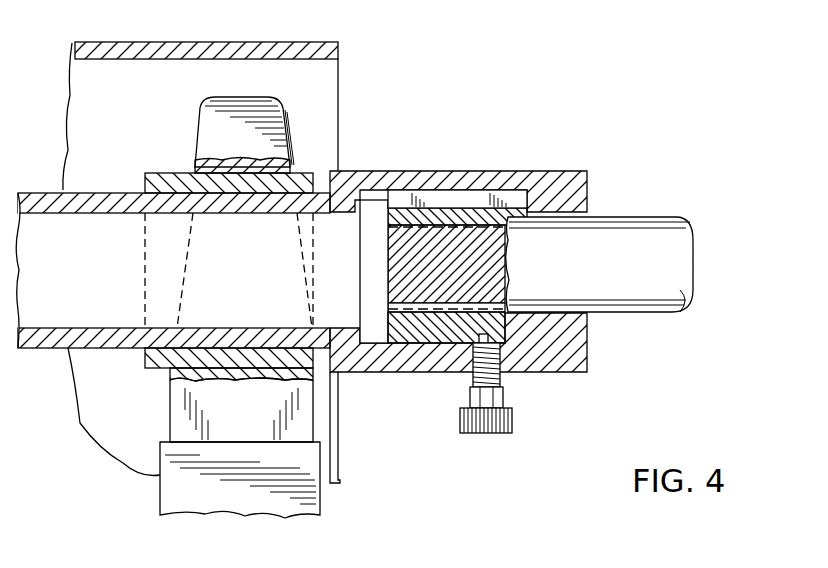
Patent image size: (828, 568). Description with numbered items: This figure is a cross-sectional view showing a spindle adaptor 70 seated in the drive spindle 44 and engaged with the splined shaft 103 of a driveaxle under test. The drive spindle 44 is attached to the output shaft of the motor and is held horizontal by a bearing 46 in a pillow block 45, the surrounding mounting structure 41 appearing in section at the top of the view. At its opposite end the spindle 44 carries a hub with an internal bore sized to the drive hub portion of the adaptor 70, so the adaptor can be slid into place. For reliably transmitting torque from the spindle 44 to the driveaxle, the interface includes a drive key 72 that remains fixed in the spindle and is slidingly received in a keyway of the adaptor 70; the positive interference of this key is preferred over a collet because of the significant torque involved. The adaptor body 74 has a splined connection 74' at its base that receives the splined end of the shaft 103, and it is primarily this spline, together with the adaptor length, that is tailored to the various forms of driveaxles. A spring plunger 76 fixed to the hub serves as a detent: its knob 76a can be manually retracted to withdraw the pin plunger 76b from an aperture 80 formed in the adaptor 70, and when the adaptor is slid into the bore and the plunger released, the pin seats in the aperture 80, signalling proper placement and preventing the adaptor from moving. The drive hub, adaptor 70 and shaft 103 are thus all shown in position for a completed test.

The housing wall 41 is at (182, 42).
The drive spindle 44 is at (102, 347).
The pillow block 45 is at (280, 116).
The bearing 46 is at (165, 187).
The spindle adaptor 70 is at (573, 360).
The drive key 72 is at (458, 192).
The sleeve insert 74 is at (480, 306).
The splined connection 74' is at (394, 318).
The spring plunger 76 is at (476, 419).
The knob 76a is at (460, 420).
The pin plunger 76b is at (477, 340).
The aperture 80 is at (478, 337).
The shaft 103 is at (642, 222).